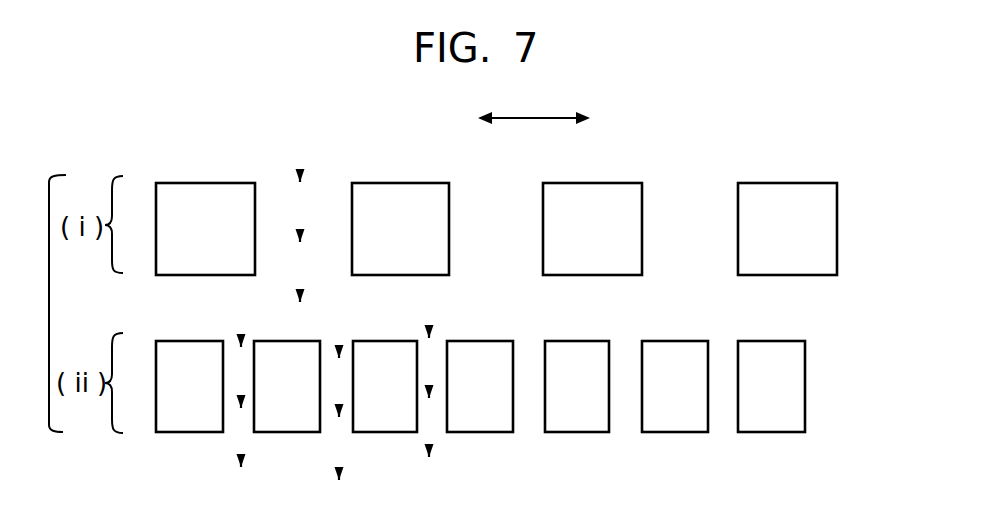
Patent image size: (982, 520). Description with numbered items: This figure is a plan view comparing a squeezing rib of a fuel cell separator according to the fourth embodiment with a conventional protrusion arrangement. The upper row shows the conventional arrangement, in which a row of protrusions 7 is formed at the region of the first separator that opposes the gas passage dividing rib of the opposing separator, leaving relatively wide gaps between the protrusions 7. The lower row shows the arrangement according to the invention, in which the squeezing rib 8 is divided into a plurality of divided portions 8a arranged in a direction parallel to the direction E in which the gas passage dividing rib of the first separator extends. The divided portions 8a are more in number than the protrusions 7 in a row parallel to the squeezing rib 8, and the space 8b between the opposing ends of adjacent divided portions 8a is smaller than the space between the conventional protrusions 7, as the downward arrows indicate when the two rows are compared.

The protrusion 7 is at (200, 203).
The squeezing rib 8 is at (478, 419).
The divided portion 8a is at (193, 418).
The space 8b is at (247, 417).
The direction in which the gas passage dividing rib extends E is at (538, 118).